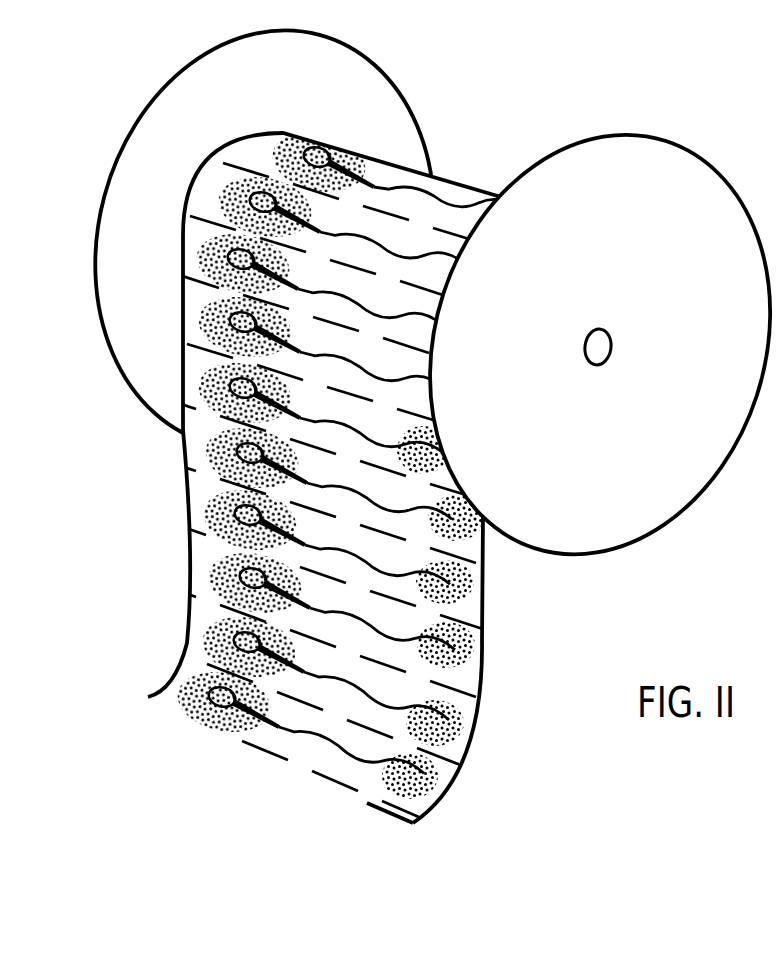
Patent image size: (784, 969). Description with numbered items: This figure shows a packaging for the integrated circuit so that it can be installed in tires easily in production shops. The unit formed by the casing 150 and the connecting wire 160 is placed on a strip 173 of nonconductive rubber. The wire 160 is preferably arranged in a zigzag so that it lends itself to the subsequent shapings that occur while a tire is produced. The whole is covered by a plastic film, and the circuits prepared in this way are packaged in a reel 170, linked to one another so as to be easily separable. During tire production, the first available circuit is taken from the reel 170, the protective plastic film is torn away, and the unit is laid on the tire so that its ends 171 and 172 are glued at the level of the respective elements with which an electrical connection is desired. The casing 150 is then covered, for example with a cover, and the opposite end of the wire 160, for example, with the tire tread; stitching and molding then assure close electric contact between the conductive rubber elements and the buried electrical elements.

The casing 150 is at (205, 728).
The connecting wire 160 is at (307, 753).
The reel 170 is at (464, 161).
The end 171 is at (170, 684).
The end 172 is at (419, 782).
The strip of nonconductive rubber 173 is at (366, 817).